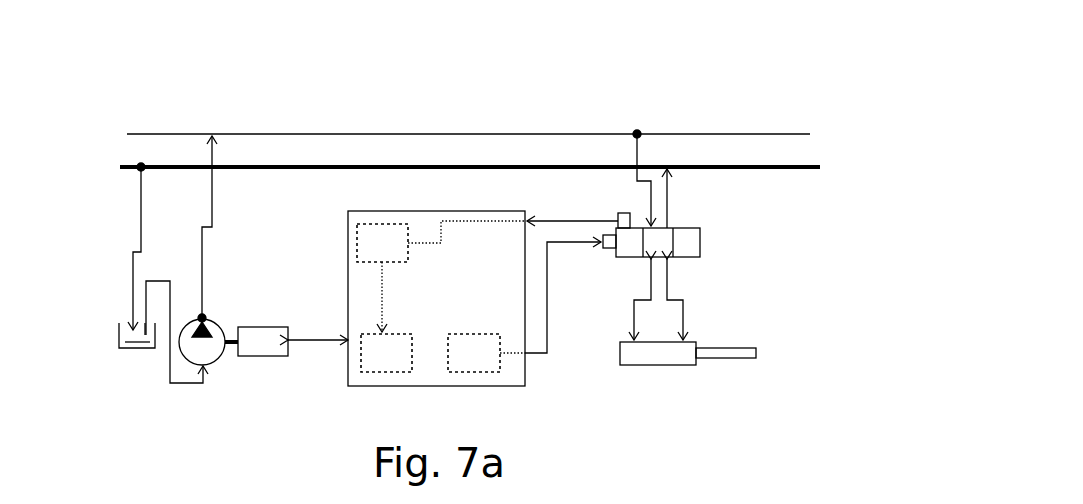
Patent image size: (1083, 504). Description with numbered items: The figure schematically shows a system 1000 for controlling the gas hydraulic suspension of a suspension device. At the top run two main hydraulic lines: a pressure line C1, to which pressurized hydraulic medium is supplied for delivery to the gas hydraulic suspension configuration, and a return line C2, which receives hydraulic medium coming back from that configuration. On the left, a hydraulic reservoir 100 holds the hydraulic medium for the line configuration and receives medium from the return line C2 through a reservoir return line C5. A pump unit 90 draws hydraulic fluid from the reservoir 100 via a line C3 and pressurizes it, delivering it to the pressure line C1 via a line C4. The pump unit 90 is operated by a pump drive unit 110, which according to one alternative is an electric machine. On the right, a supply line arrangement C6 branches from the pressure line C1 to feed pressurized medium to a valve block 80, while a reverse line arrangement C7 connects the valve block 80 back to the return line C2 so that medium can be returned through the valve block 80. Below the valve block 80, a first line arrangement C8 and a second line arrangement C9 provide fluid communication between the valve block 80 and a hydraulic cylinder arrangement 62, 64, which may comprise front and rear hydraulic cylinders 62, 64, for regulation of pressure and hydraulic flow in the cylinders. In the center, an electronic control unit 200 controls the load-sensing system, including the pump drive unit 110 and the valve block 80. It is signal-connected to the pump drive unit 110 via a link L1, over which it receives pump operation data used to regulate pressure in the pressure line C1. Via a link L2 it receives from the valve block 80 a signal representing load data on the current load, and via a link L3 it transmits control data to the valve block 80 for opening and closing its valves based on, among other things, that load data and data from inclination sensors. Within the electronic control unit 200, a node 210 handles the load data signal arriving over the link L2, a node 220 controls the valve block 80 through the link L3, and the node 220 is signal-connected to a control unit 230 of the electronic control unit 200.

The system 1000 is at (698, 70).
The pressure line C1 is at (347, 130).
The return line C2 is at (291, 163).
The line C3 is at (147, 280).
The line C4 is at (203, 247).
The reservoir return line C5 is at (140, 223).
The supply line arrangement C6 is at (650, 198).
The reverse line arrangement C7 is at (668, 198).
The first line arrangement C8 is at (633, 315).
The second line arrangement C9 is at (685, 312).
The link L1 is at (326, 342).
The link L2 is at (557, 217).
The link L3 is at (548, 285).
The hydraulic reservoir 100 is at (138, 352).
The pump unit 90 is at (218, 363).
The pump drive unit 110 is at (276, 349).
The electronic control unit 200 is at (440, 325).
The node 210 is at (474, 353).
The node 220 is at (382, 243).
The control unit 230 is at (386, 353).
The valve block 80 is at (702, 242).
The front hydraulic cylinder 62 is at (706, 381).
The rear hydraulic cylinder 64 is at (702, 364).